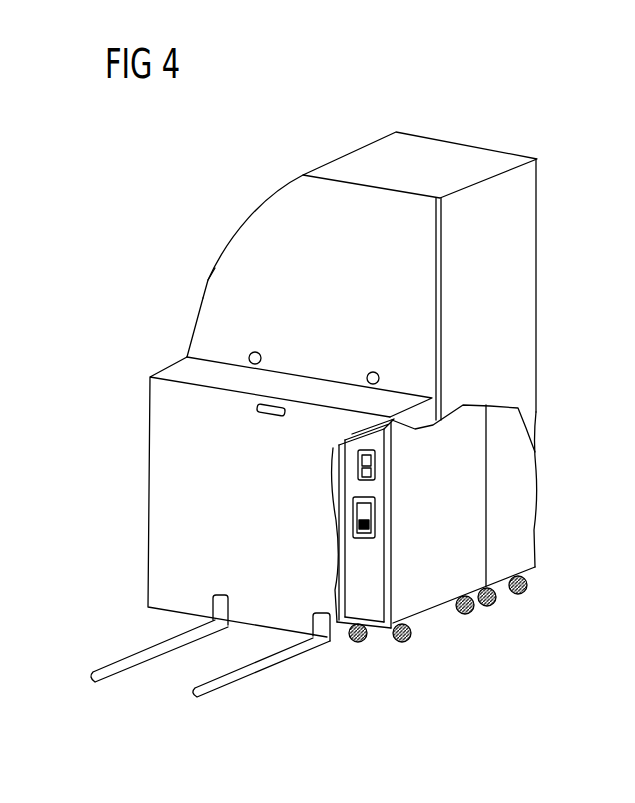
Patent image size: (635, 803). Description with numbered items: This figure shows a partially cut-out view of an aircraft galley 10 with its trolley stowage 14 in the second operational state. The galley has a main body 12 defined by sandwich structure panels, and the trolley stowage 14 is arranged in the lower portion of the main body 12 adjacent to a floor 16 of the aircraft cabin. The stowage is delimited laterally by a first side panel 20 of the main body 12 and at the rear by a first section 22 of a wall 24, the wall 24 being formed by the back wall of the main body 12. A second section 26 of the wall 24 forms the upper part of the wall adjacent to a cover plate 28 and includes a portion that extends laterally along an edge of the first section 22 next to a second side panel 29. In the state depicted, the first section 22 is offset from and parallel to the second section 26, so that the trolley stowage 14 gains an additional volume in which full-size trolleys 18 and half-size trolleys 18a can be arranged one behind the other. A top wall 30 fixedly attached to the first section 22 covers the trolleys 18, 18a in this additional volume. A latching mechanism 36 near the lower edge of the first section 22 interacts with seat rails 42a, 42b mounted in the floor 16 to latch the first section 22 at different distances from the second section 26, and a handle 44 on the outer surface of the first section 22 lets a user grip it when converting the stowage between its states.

The aircraft galley 10 is at (550, 129).
The main body 12 is at (413, 151).
The trolley stowage 14 is at (520, 462).
The floor 16 is at (383, 702).
The full-size trolley 18 is at (423, 603).
The half-size trolley 18a is at (502, 572).
The first side panel 20 is at (530, 253).
The first section of the wall 22 is at (155, 435).
The wall 24 is at (277, 205).
The second section of the wall 26 is at (198, 332).
The cover plate 28 is at (467, 151).
The second side panel 29 is at (208, 277).
The top wall 30 is at (305, 385).
The latching mechanism 36 is at (279, 589).
The seat rail 42a is at (128, 673).
The seat rail 42b is at (232, 685).
The handle 44 is at (267, 415).